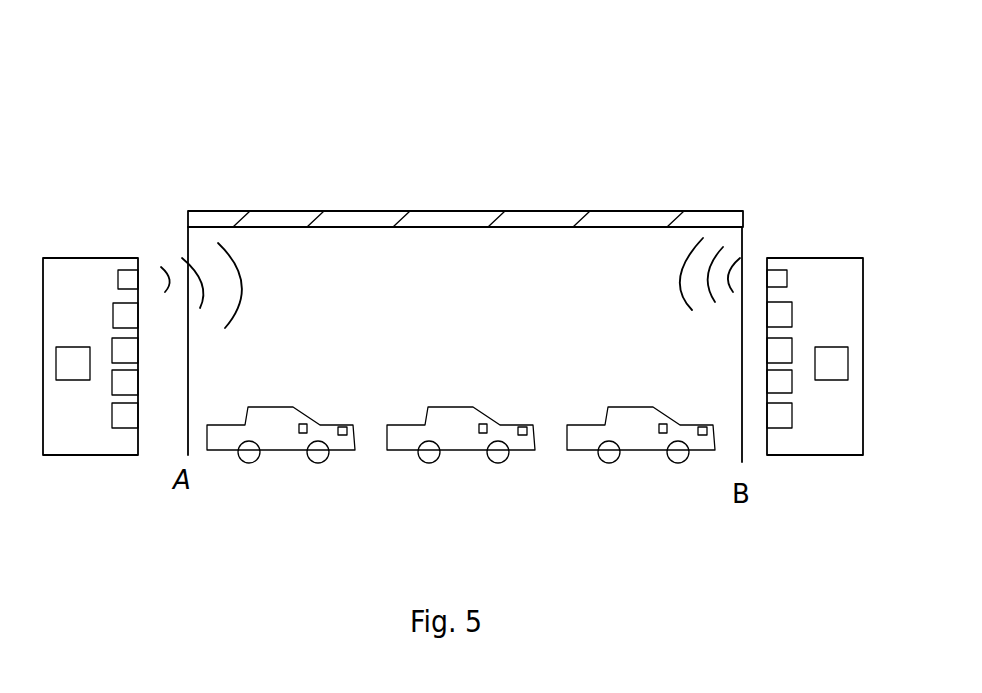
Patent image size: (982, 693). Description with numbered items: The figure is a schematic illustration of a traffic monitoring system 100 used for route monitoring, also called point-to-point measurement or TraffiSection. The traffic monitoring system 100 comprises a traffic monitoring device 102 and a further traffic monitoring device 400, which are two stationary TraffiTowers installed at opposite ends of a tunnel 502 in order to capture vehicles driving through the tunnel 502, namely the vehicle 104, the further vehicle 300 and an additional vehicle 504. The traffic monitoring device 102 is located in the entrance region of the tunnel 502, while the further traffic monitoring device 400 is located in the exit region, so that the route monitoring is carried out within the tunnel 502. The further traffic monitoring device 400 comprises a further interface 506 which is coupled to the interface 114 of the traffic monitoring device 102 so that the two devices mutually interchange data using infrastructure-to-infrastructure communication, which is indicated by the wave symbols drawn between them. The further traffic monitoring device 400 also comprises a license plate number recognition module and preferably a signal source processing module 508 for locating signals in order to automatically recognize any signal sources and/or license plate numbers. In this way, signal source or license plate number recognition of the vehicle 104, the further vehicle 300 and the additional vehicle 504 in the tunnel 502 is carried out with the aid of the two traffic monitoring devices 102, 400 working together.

The traffic monitoring system 100 is at (200, 85).
The traffic monitoring device 102 is at (55, 255).
The interface 114 is at (137, 277).
The tunnel 502 is at (448, 208).
The vehicle 104 is at (272, 408).
The further vehicle 300 is at (451, 407).
The additional vehicle 504 is at (632, 410).
The further traffic monitoring device 400 is at (848, 260).
The further interface 506 is at (767, 275).
The signal source processing module 508 is at (780, 428).